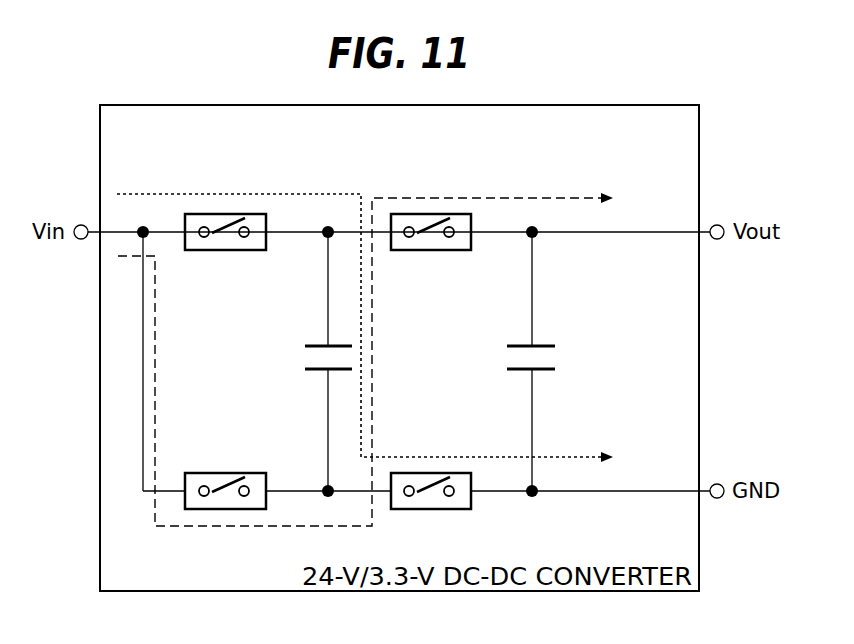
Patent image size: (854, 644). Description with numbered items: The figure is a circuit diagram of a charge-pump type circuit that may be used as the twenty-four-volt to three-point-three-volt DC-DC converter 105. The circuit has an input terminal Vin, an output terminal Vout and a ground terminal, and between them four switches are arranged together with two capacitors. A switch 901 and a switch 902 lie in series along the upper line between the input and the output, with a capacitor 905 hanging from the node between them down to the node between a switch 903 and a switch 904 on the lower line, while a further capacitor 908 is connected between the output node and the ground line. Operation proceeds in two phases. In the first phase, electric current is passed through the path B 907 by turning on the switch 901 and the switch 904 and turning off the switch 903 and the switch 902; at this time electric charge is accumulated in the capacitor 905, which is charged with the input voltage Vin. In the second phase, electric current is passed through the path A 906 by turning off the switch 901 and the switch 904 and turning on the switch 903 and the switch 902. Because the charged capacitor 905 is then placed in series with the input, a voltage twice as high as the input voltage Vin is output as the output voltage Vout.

The 24-V/3.3-V DC-DC converter 105 is at (699, 138).
The switch 901 is at (218, 252).
The switch 902 is at (432, 252).
The switch 903 is at (218, 472).
The switch 904 is at (430, 511).
The capacitor 905 is at (302, 356).
The A 906 is at (574, 198).
The B 907 is at (579, 456).
The capacitor 908 is at (556, 360).